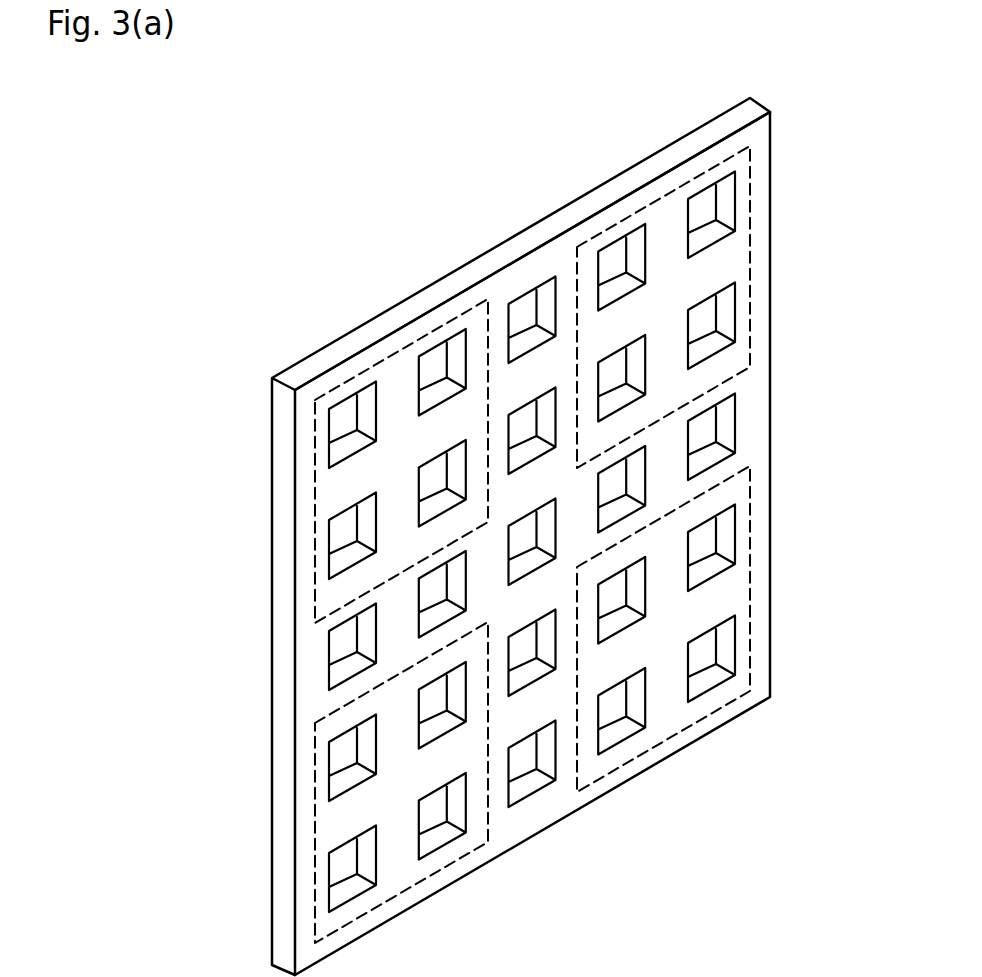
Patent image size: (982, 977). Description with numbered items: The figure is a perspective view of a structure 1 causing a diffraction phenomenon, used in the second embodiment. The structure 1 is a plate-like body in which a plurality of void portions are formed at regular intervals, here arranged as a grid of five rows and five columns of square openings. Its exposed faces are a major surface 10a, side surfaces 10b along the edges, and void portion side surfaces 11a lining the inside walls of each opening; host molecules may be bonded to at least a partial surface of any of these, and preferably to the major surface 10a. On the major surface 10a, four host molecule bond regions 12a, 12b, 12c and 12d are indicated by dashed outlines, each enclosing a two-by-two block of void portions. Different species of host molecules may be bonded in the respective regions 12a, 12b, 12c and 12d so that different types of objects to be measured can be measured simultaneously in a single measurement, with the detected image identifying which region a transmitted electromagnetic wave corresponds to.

The structure causing a diffraction phenomenon 1 is at (308, 197).
The major surface 10a is at (748, 417).
The side surfaces 10b is at (750, 113).
The void portion side surfaces 11a is at (710, 233).
The host molecule bond region 12a is at (615, 223).
The host molecule bond region 12b is at (410, 347).
The host molecule bond region 12c is at (672, 735).
The host molecule bond region 12d is at (425, 878).